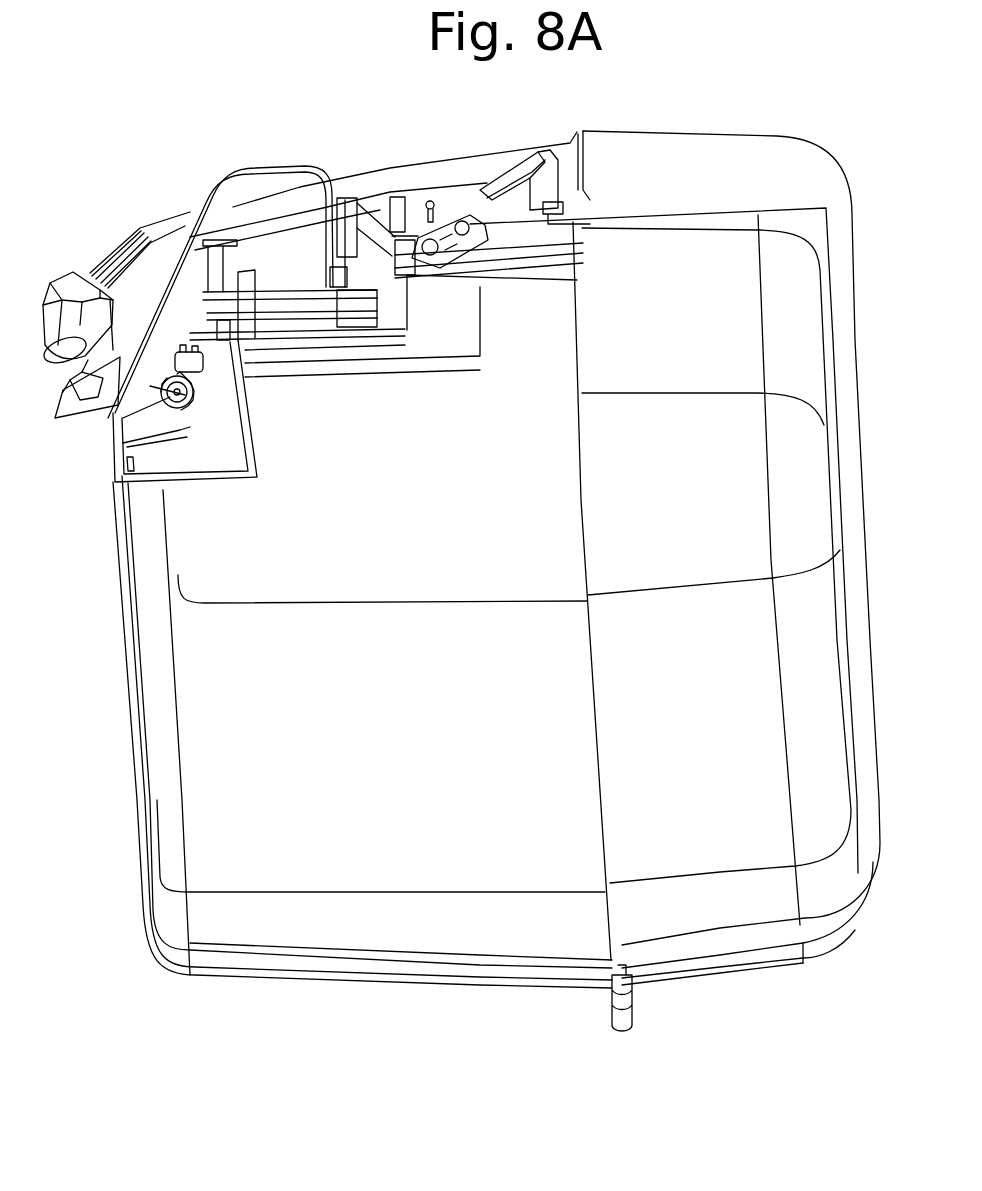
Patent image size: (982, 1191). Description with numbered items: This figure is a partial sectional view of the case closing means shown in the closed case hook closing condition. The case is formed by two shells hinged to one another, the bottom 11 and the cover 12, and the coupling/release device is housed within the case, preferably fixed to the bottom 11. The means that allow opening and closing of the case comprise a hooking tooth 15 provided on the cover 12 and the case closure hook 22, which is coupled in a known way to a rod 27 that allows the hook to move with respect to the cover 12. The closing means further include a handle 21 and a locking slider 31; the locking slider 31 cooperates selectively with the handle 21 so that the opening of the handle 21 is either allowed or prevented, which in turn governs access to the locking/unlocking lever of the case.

The bottom 11 is at (215, 525).
The cover 12 is at (691, 164).
The hooking tooth 15 is at (565, 220).
The handle 21 is at (356, 198).
The case closure hook 22 is at (516, 182).
The rod 27 is at (454, 249).
The locking slider 31 is at (424, 290).